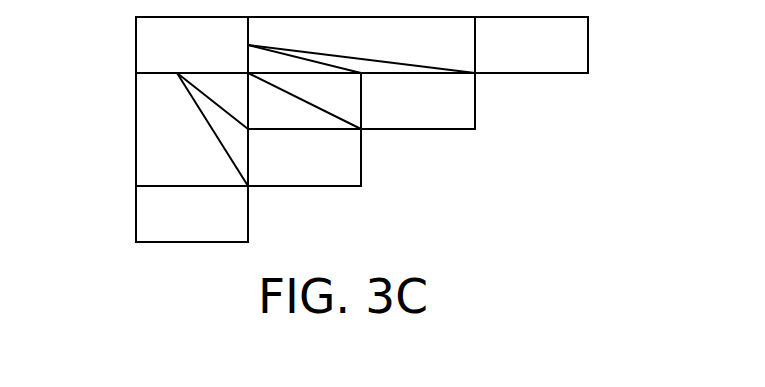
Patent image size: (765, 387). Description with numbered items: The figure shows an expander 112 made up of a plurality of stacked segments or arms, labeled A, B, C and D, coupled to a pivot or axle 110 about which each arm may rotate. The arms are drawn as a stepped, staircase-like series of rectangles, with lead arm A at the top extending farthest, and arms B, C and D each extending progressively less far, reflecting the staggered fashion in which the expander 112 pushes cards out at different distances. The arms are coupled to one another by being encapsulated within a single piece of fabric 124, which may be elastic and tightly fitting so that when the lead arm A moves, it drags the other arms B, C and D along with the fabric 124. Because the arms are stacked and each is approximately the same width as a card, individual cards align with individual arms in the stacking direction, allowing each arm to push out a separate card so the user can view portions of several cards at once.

The axle 110 is at (136, 44).
The fabric 124 is at (155, 133).
The expander 112 is at (136, 209).
The lead arm A is at (588, 43).
The arm B is at (475, 102).
The arm C is at (361, 157).
The arm D is at (248, 208).